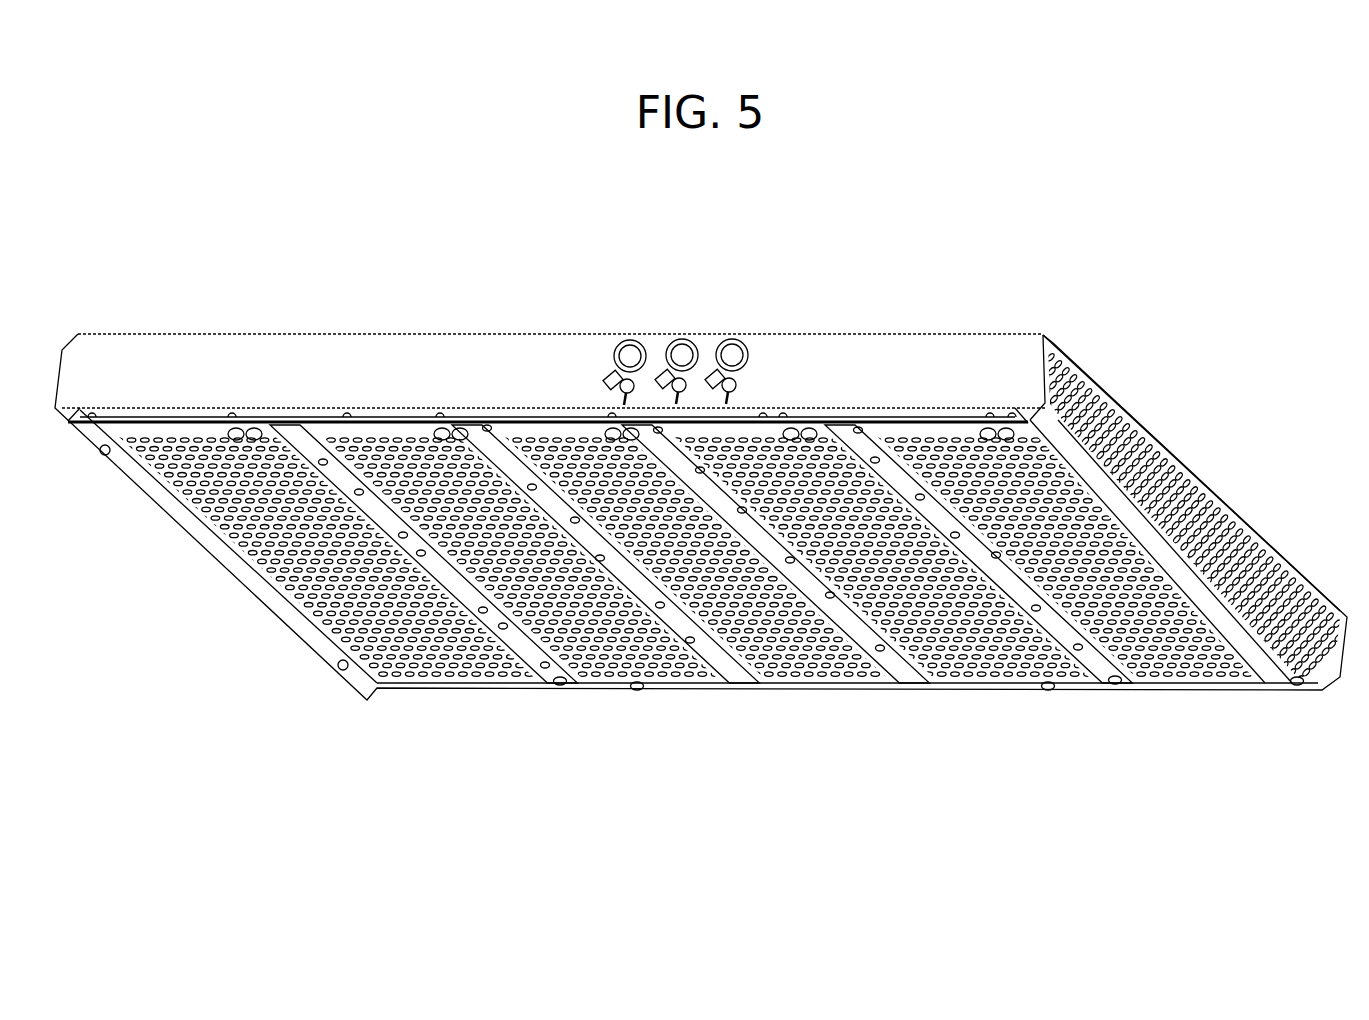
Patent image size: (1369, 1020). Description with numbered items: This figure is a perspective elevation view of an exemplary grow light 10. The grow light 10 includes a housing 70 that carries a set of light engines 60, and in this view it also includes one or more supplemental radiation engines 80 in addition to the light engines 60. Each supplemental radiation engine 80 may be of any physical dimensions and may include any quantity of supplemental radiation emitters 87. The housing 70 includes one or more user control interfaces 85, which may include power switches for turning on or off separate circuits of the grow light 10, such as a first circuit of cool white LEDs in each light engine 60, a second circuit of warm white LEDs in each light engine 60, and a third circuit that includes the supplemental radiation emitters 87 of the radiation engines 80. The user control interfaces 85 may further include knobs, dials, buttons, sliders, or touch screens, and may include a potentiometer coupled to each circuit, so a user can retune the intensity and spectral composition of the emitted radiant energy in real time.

The grow light 10 is at (240, 655).
The light engine 60 is at (461, 700).
The housing 70 is at (291, 355).
The supplemental radiation engine 80 is at (565, 702).
The user control interface 85 is at (750, 318).
The supplemental radiation emitter 87 is at (876, 440).